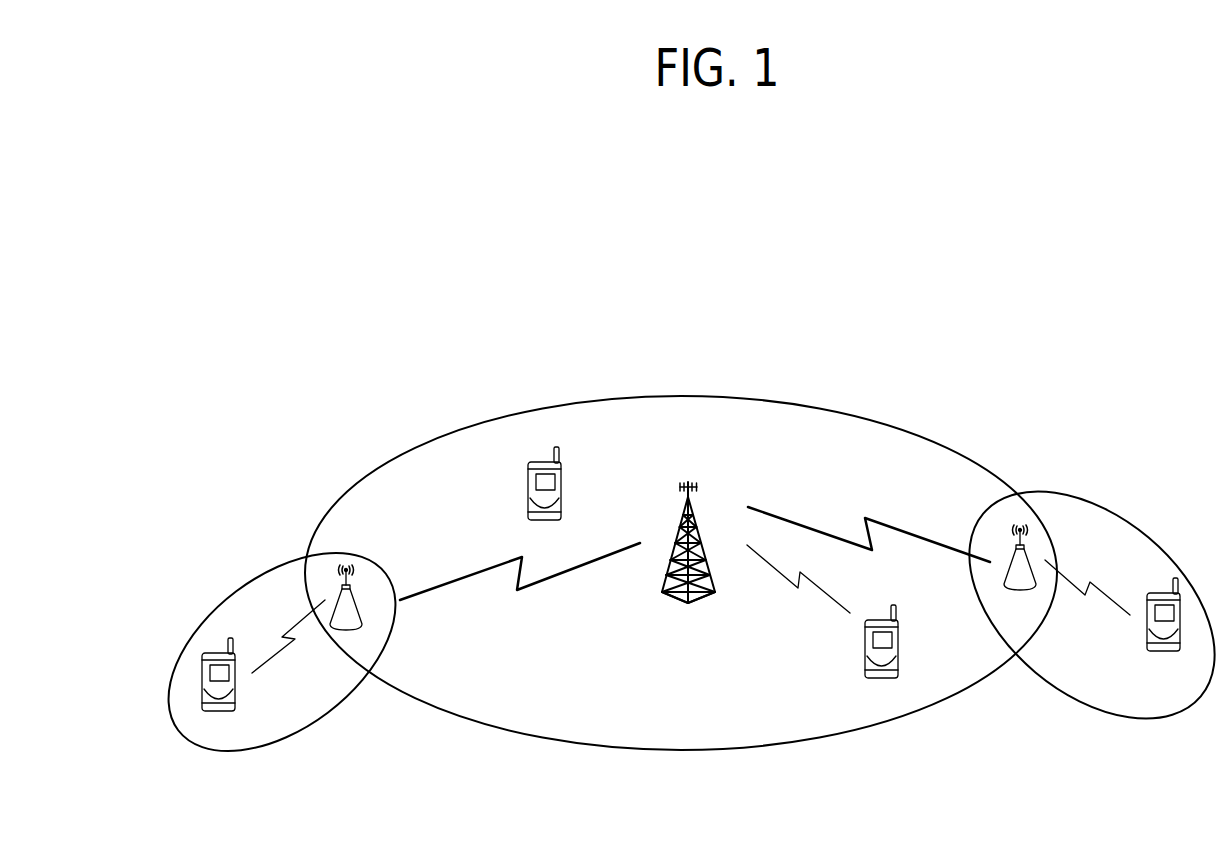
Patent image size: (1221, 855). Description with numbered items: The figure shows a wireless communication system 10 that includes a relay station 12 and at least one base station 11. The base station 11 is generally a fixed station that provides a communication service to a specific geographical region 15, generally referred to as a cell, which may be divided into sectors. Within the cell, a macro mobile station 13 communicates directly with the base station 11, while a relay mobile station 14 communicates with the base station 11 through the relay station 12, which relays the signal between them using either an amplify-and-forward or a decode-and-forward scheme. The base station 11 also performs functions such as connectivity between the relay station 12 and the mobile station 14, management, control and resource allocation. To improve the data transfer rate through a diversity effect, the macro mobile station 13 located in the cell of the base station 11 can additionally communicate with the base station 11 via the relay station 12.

The wireless communication system 10 is at (858, 380).
The base station 11 is at (693, 508).
The relay station 12 is at (353, 597).
The macro mobile station 13 is at (528, 490).
The relay mobile station 14 is at (236, 687).
The geographical region (cell) 15 is at (658, 396).